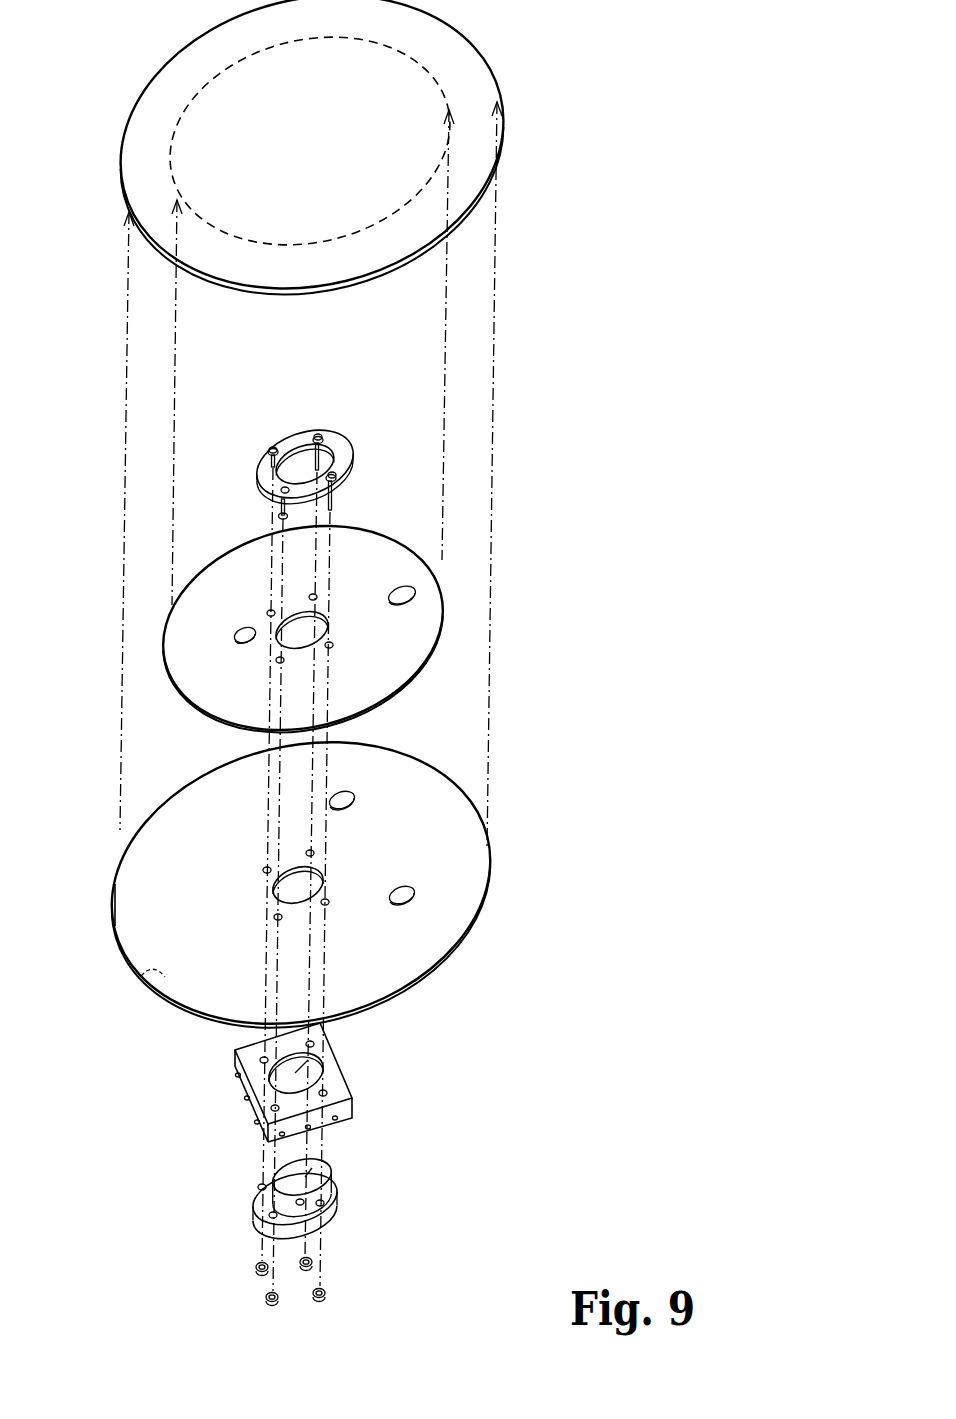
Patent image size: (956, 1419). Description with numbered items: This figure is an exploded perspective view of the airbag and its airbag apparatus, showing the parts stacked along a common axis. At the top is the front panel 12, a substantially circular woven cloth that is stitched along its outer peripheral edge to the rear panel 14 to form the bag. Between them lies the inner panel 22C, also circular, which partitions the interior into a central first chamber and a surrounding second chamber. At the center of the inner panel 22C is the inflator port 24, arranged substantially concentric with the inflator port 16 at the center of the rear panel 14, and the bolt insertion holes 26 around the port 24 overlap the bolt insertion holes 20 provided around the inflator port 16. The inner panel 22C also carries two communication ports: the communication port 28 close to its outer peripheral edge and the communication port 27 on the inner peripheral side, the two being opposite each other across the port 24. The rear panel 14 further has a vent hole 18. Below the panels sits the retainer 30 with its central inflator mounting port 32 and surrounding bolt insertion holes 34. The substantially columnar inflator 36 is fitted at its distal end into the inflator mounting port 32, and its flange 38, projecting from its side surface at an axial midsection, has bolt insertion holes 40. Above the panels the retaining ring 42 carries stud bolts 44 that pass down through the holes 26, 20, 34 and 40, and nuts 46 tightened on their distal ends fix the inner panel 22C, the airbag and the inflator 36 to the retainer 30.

The front panel 12 is at (433, 31).
The rear panel 14 is at (130, 975).
The inflator port 16 is at (282, 891).
The vent hole 18 is at (352, 797).
The bolt insertion holes 20 is at (265, 870).
The inner panel 22C is at (428, 603).
The inflator port 24 is at (283, 633).
The bolt insertion holes 26 is at (268, 613).
The communication port 27 is at (243, 650).
The communication port 28 is at (397, 587).
The retainer 30 is at (350, 1080).
The inflator mounting port 32 is at (330, 1058).
The bolt insertion holes 34 is at (255, 1063).
The inflator 36 is at (320, 1162).
The flange 38 is at (337, 1187).
The bolt insertion holes 40 is at (258, 1187).
The retaining ring 42 is at (343, 453).
The stud bolts 44 is at (337, 504).
The nuts 46 is at (266, 1297).